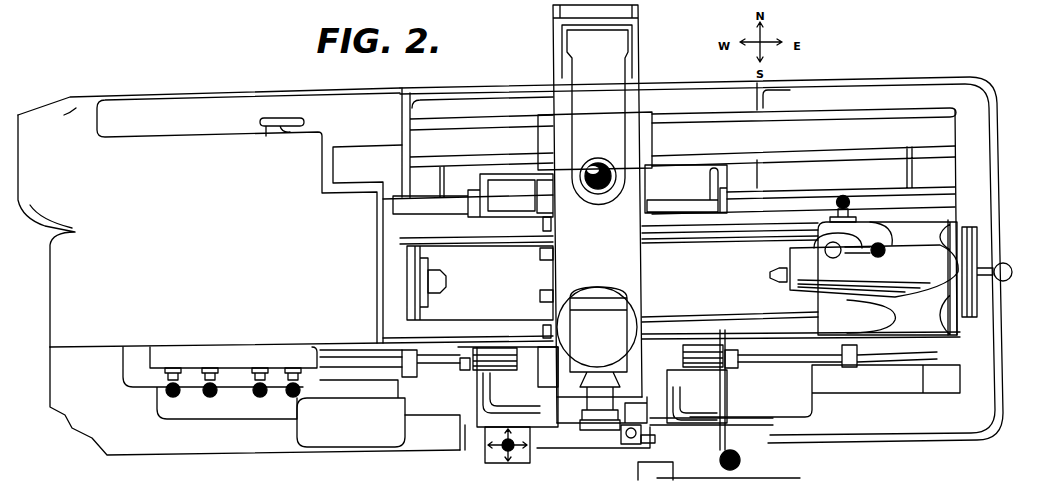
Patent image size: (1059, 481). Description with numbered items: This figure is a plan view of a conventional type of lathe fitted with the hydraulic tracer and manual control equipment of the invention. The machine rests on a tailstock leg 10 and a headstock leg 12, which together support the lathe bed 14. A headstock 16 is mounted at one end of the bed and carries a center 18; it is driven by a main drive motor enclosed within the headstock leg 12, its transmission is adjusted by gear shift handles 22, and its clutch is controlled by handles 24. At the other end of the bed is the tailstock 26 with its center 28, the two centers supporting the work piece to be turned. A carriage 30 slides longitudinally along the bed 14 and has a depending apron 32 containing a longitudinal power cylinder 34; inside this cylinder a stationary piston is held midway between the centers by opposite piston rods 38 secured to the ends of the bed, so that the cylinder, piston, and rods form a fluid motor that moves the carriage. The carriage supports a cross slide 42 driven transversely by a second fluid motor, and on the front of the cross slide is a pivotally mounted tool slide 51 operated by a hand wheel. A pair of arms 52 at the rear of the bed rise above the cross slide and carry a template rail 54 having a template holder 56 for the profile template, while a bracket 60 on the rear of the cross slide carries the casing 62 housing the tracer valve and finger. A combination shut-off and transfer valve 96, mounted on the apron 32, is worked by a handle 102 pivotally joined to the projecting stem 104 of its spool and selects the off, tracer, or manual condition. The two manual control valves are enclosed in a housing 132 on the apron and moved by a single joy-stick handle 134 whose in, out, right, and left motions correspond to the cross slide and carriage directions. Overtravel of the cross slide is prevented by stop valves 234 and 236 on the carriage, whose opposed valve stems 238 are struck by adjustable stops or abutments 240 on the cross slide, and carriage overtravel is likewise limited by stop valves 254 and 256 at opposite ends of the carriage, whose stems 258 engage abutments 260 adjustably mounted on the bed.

The tailstock leg 10 is at (930, 430).
The headstock leg 12 is at (230, 448).
The lathe bed 14 is at (948, 197).
The headstock 16 is at (185, 150).
The center 18 is at (447, 281).
The gear shift handles 22 is at (176, 395).
The handles 24 is at (741, 459).
The tailstock 26 is at (810, 283).
The center 28 is at (772, 274).
The carriage 30 is at (553, 420).
The apron 32 is at (542, 428).
The longitudinal power cylinder 34 is at (460, 450).
The piston rods 38 is at (370, 398).
The cross slide 42 is at (637, 280).
The tool slide 51 is at (610, 335).
The arms 52 is at (446, 165).
The template rail 54 is at (820, 127).
The template holder 56 is at (650, 117).
The bracket 60 is at (578, 60).
The casing 62 is at (603, 160).
The combination shut-off and transfer valve 96 is at (712, 432).
The handle 102 is at (631, 441).
The projecting stem 104 is at (650, 446).
The housing 132 is at (485, 463).
The joy-stick handle 134 is at (520, 463).
The stop valve 234 is at (528, 198).
The stop valve 236 is at (531, 378).
The valve stems 238 is at (552, 225).
The stops or abutments 240 is at (540, 254).
The stop valve 254 is at (536, 389).
The stop valve 256 is at (697, 368).
The stems 258 is at (462, 370).
The abutments 260 is at (415, 377).